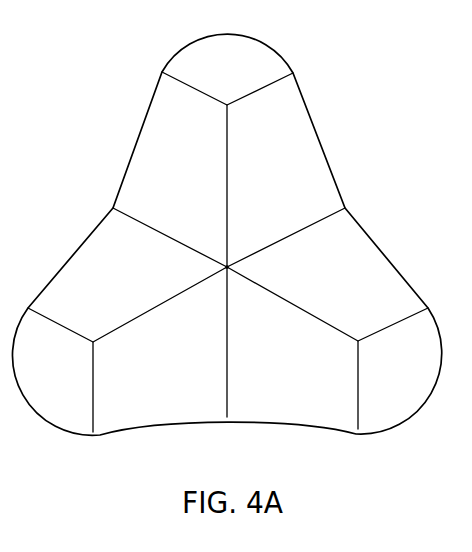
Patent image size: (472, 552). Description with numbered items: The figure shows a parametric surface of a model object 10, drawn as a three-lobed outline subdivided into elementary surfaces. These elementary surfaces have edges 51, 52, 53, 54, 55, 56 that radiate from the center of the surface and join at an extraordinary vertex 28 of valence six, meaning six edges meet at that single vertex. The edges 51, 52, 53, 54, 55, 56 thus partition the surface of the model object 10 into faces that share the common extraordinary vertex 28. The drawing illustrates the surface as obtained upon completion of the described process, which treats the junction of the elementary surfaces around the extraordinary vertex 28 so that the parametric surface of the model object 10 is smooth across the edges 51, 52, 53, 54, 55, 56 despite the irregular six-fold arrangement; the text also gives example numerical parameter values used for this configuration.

The model object 10 is at (290, 424).
The extraordinary vertex 28 is at (227, 267).
The edge 51 is at (280, 237).
The edge 52 is at (222, 165).
The edge 53 is at (138, 220).
The edge 54 is at (120, 322).
The edge 55 is at (228, 402).
The edge 56 is at (290, 305).